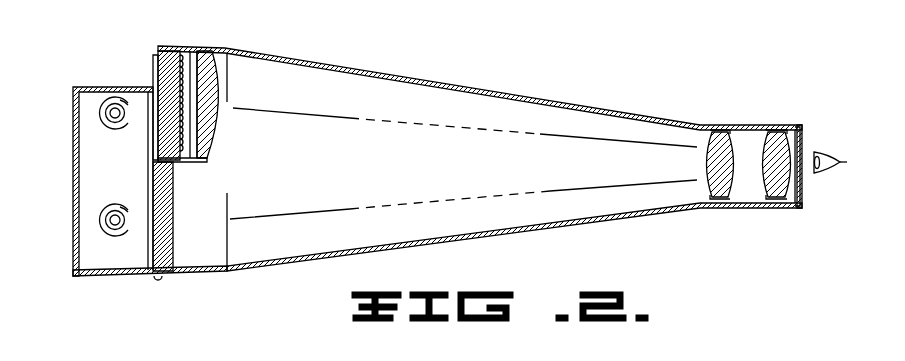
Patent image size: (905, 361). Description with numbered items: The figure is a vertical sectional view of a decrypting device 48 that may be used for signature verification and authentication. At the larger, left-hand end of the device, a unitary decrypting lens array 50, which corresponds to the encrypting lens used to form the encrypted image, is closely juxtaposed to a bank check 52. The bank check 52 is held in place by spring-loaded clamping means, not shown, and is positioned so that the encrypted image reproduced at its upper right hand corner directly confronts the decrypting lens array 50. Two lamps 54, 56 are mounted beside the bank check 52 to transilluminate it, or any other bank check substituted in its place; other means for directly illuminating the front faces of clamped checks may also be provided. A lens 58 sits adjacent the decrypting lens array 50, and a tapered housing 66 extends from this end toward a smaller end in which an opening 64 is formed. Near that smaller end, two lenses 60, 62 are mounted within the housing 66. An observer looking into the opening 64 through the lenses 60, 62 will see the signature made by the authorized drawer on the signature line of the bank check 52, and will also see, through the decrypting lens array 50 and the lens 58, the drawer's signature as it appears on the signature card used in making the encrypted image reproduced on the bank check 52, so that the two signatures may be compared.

The decrypting device 48 is at (553, 94).
The decrypting lens array 50 is at (156, 62).
The bank check 52 is at (153, 70).
The lamp 54 is at (101, 112).
The lamp 56 is at (101, 220).
The lens 58 is at (208, 78).
The lens 60 is at (795, 145).
The lens 62 is at (735, 150).
The opening 64 is at (799, 190).
The housing 66 is at (387, 75).